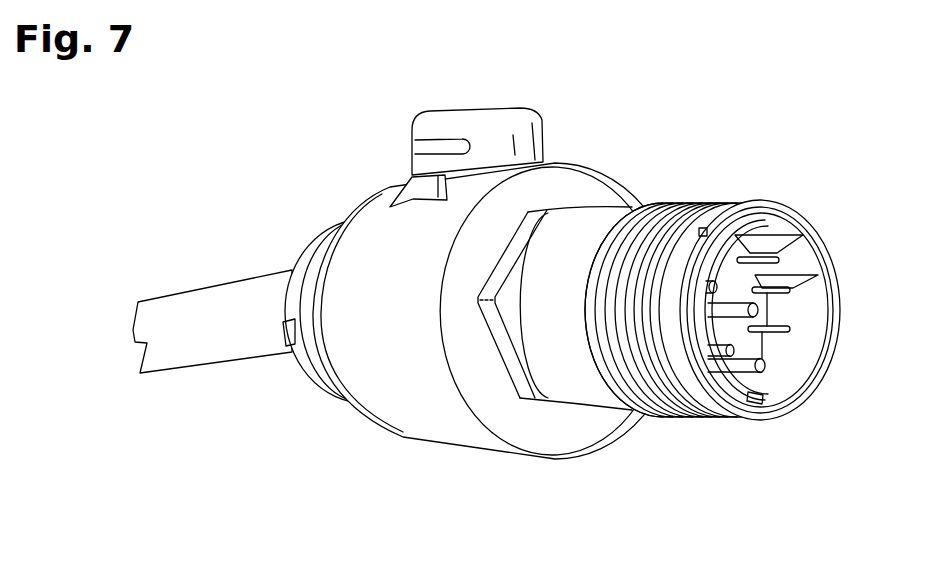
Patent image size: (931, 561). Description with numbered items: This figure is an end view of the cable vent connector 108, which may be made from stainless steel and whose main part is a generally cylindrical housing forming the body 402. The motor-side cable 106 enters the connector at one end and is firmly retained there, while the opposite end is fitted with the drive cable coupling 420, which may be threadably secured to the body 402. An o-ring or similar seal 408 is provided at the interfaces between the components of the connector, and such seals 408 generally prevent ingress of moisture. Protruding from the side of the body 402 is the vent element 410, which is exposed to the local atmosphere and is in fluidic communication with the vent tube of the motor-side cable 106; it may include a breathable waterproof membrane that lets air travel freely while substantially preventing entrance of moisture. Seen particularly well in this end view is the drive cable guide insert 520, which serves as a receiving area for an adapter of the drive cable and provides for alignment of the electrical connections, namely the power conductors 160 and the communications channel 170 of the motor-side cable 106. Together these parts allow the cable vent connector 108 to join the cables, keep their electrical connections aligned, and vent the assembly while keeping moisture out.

The motor-side cable 106 is at (208, 323).
The cable vent connector 108 is at (507, 299).
The body 402 is at (365, 248).
The seal 408 is at (647, 259).
The vent element 410 is at (452, 128).
The drive cable coupling 420 is at (715, 208).
The drive cable guide insert 520 is at (787, 410).
The power conductors 160 is at (728, 356).
The communications channel 170 is at (797, 277).